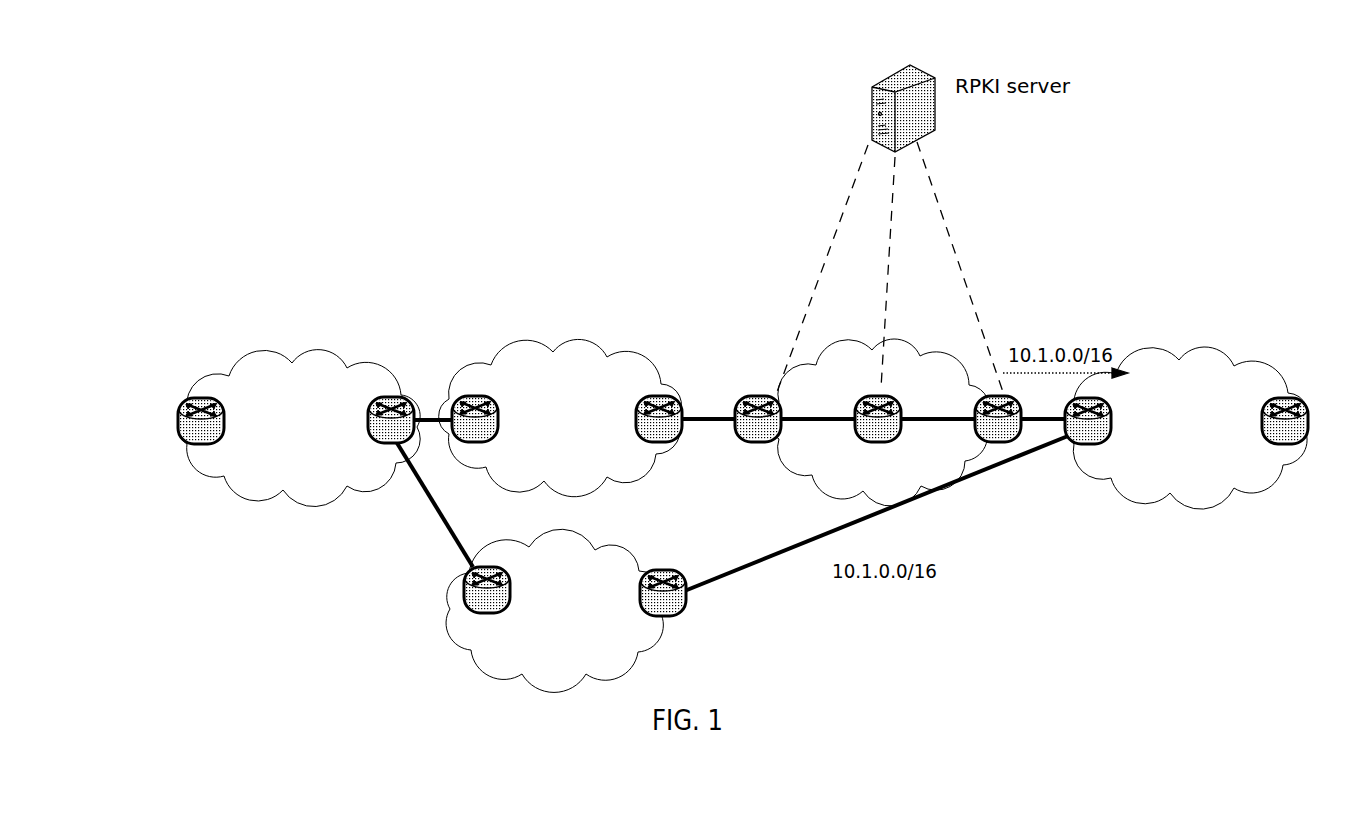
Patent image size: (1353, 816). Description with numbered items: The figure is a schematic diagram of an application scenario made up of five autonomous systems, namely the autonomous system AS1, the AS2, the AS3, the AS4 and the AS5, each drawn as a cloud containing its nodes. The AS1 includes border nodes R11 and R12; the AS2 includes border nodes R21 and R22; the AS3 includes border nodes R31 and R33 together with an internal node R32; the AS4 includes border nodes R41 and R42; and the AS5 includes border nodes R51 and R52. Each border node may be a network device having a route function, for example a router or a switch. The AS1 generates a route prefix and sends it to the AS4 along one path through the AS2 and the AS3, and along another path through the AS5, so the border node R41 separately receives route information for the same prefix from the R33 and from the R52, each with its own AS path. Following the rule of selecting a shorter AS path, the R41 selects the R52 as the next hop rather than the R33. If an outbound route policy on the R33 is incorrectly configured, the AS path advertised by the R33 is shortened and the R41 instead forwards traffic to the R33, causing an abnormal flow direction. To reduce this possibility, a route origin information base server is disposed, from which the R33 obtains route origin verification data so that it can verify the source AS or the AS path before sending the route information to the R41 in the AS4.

The border node R11 is at (188, 408).
The border node R12 is at (399, 396).
The border node R21 is at (470, 442).
The border node R22 is at (664, 434).
The border node R31 is at (749, 434).
The internal node R32 is at (878, 434).
The border node R33 is at (984, 433).
The border node R41 is at (1107, 433).
The border node R42 is at (1289, 440).
The border node R51 is at (459, 587).
The border node R52 is at (690, 600).
The autonomous system AS1 is at (299, 428).
The autonomous system AS2 is at (560, 417).
The autonomous system AS3 is at (879, 422).
The autonomous system AS4 is at (1187, 428).
The autonomous system AS5 is at (555, 610).